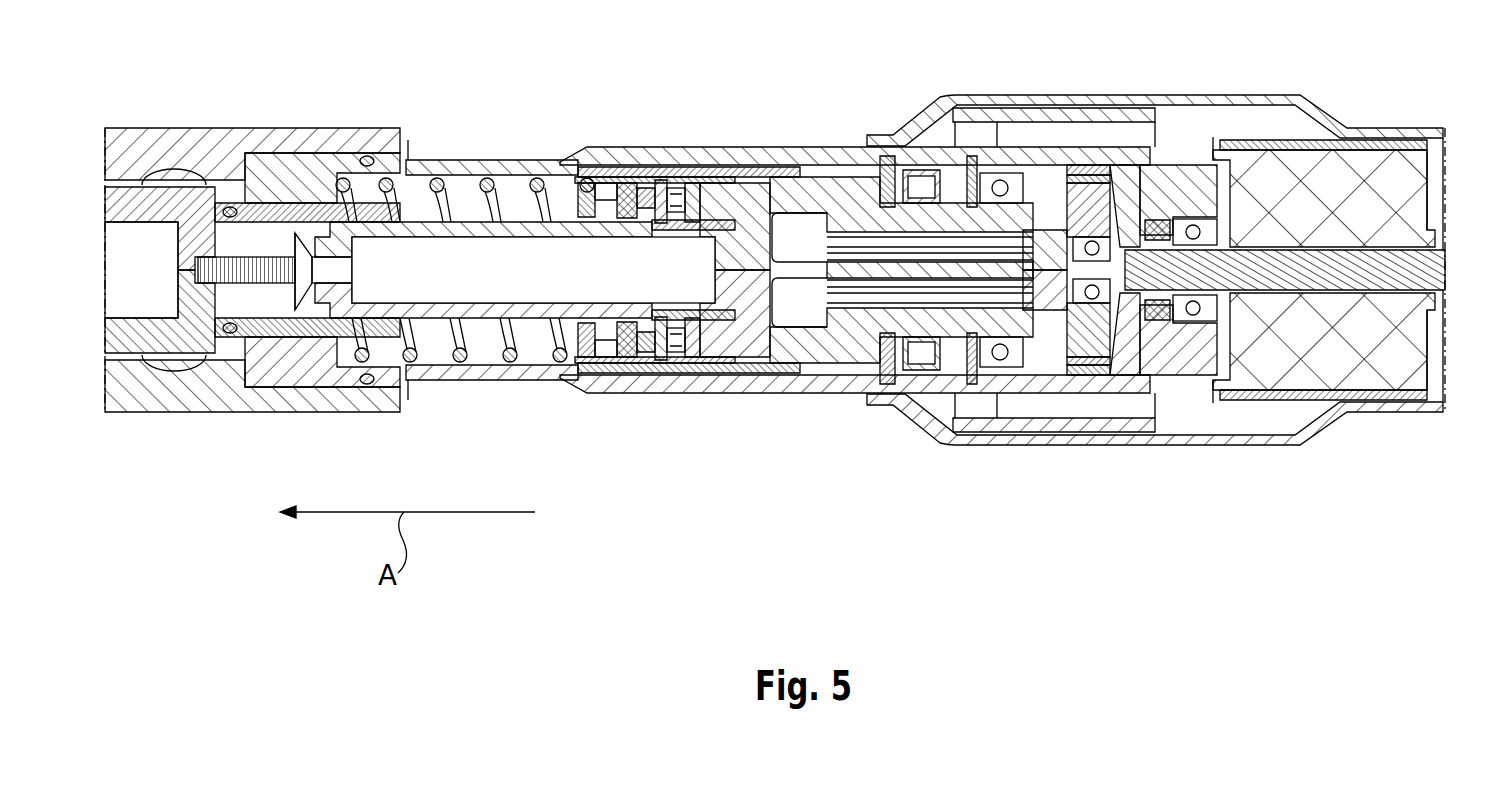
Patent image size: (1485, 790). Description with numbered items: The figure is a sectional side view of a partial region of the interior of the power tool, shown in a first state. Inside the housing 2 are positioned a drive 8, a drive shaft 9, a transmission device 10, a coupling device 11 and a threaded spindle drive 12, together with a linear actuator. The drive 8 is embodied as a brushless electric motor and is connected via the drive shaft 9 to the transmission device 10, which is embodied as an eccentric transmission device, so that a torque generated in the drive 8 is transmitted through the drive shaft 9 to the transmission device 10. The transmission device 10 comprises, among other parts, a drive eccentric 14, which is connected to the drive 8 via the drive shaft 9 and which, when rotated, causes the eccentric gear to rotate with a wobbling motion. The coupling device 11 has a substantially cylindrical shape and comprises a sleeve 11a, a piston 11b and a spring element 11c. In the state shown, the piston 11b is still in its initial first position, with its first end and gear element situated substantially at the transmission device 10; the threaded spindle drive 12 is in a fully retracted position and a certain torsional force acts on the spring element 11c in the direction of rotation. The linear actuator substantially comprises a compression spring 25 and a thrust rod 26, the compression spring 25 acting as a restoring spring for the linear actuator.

The housing 2 is at (982, 95).
The drive 8 is at (1343, 197).
The drive shaft 9 is at (1210, 273).
The transmission device 10 is at (1088, 375).
The coupling device 11 is at (962, 337).
The sleeve 11a is at (858, 320).
The piston 11b is at (752, 265).
The spring element 11c is at (870, 262).
The threaded spindle drive 12 is at (727, 177).
The drive eccentric 14 is at (1123, 200).
The compression spring 25 is at (505, 330).
The thrust rod 26 is at (406, 235).